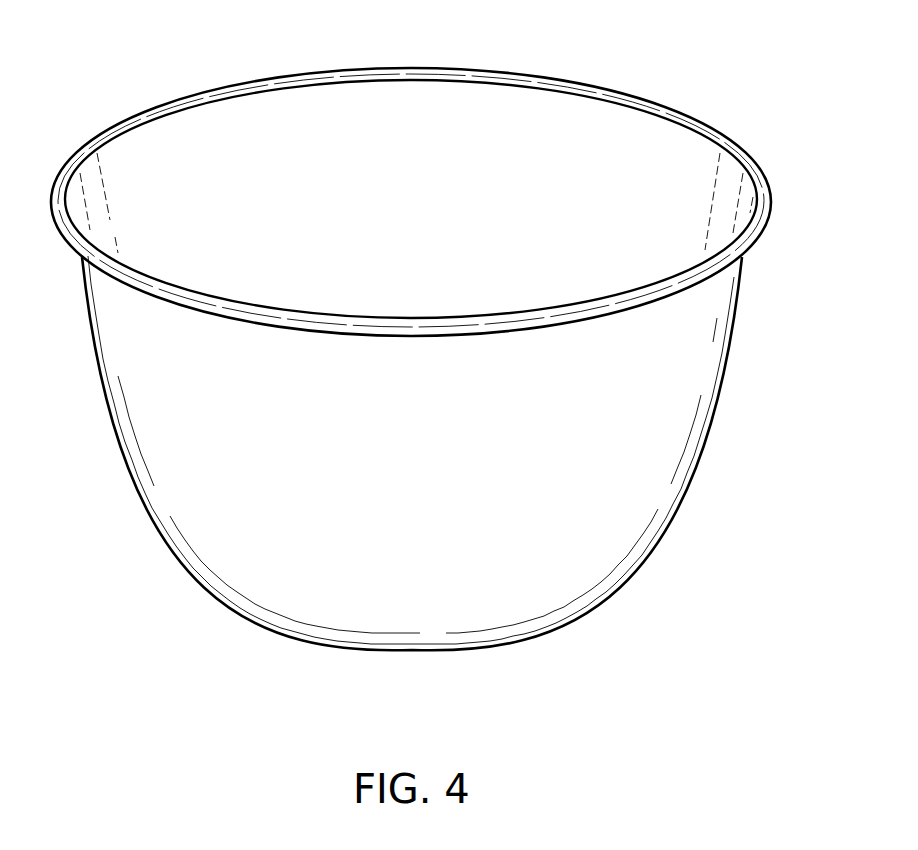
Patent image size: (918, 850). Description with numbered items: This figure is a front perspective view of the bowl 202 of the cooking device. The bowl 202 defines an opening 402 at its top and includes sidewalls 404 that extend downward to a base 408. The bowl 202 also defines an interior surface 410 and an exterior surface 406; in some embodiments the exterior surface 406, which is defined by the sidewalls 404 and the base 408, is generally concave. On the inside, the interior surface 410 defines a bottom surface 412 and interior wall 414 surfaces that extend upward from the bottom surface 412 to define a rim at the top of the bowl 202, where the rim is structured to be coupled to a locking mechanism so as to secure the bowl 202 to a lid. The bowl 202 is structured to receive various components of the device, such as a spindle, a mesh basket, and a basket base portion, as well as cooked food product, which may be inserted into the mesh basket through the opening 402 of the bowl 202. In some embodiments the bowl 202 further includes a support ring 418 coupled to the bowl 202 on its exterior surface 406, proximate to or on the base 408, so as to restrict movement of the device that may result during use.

The bowl 202 is at (178, 61).
The opening 402 is at (462, 107).
The sidewalls 404 is at (177, 418).
The exterior surface 406 is at (230, 575).
The base 408 is at (557, 588).
The interior surface 410 is at (420, 123).
The bottom surface 412 is at (391, 302).
The interior wall 414 is at (275, 133).
The support ring 418 is at (363, 647).